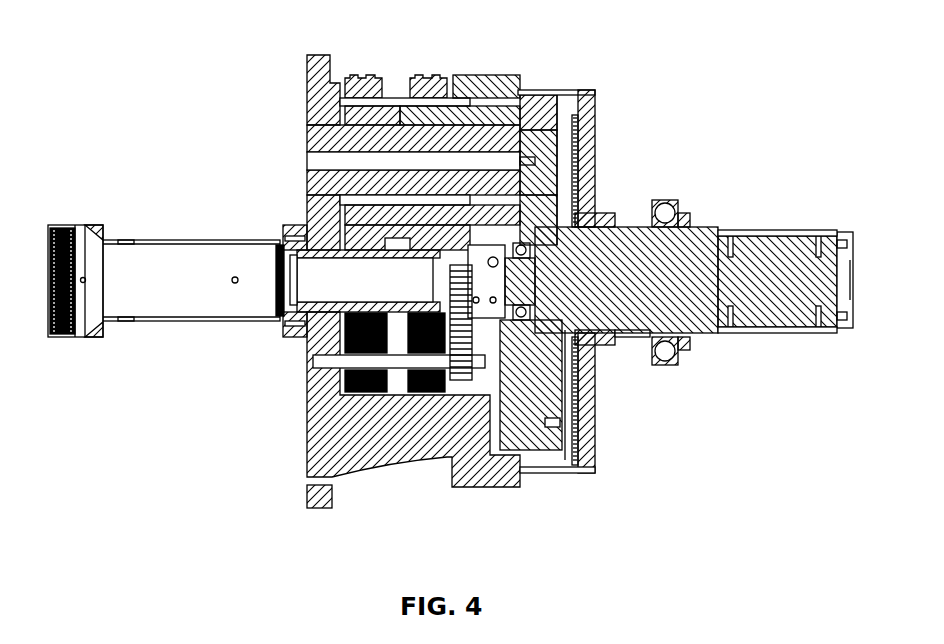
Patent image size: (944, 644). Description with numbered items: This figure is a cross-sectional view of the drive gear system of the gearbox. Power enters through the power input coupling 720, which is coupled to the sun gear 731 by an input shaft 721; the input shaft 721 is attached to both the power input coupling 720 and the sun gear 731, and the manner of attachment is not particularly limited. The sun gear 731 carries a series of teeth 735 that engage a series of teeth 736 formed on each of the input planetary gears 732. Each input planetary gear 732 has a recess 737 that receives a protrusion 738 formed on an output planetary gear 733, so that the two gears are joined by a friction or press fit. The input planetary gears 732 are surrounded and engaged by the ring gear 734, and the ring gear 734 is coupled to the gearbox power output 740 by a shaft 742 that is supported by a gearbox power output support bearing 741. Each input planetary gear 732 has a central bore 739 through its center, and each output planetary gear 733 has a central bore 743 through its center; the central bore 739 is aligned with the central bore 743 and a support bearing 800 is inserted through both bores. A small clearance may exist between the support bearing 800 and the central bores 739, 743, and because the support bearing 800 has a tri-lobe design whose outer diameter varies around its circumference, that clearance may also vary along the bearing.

The power input coupling 720 is at (60, 338).
The input shaft 721 is at (183, 237).
The sun gear 731 is at (315, 328).
The input planetary gear 732 is at (372, 78).
The output planetary gear 733 is at (523, 107).
The ring gear 734 is at (595, 470).
The teeth of sun gear 735 is at (305, 225).
The teeth of input planetary gear 736 is at (307, 222).
The recess 737 is at (440, 78).
The protrusion 738 is at (453, 78).
The central bore of input planetary gear 739 is at (340, 115).
The gearbox power output 740 is at (805, 335).
The gearbox power output support bearing 741 is at (667, 365).
The shaft 742 is at (707, 225).
The central bore of output planetary gear 743 is at (523, 125).
The support bearing 800 is at (308, 142).